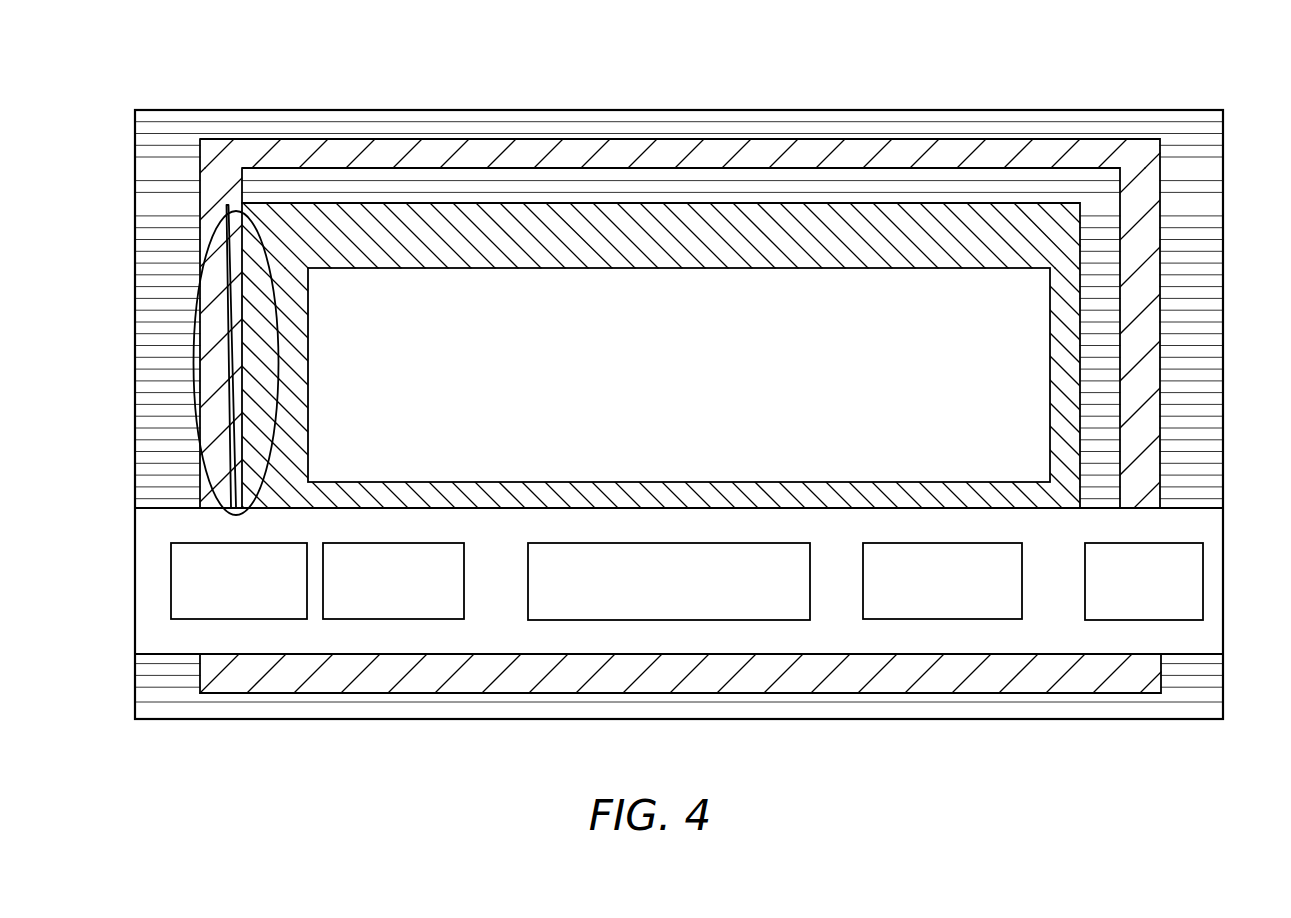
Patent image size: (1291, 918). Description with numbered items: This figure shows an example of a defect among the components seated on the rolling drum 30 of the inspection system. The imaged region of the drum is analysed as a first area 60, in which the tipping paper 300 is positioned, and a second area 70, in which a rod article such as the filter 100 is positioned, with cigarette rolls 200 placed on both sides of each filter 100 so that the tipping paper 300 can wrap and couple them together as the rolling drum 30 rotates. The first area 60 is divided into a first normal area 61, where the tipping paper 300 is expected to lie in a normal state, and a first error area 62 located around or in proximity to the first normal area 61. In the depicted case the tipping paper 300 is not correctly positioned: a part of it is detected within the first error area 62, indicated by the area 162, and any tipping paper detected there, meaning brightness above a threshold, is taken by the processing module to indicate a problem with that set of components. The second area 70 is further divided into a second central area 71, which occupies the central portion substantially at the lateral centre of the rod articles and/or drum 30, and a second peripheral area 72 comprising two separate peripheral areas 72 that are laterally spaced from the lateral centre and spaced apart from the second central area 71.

The rolling drum 30 is at (157, 122).
The first area 60 is at (1152, 325).
The first error area 62 is at (1097, 150).
The first normal area 61 is at (457, 290).
The tipping paper 300 is at (620, 240).
The area 162 is at (237, 292).
The filter 100 is at (838, 598).
The second area 70 is at (503, 652).
The second peripheral area 72 is at (395, 598).
The second central area 71 is at (673, 598).
The cigarette rolls 200 is at (237, 635).